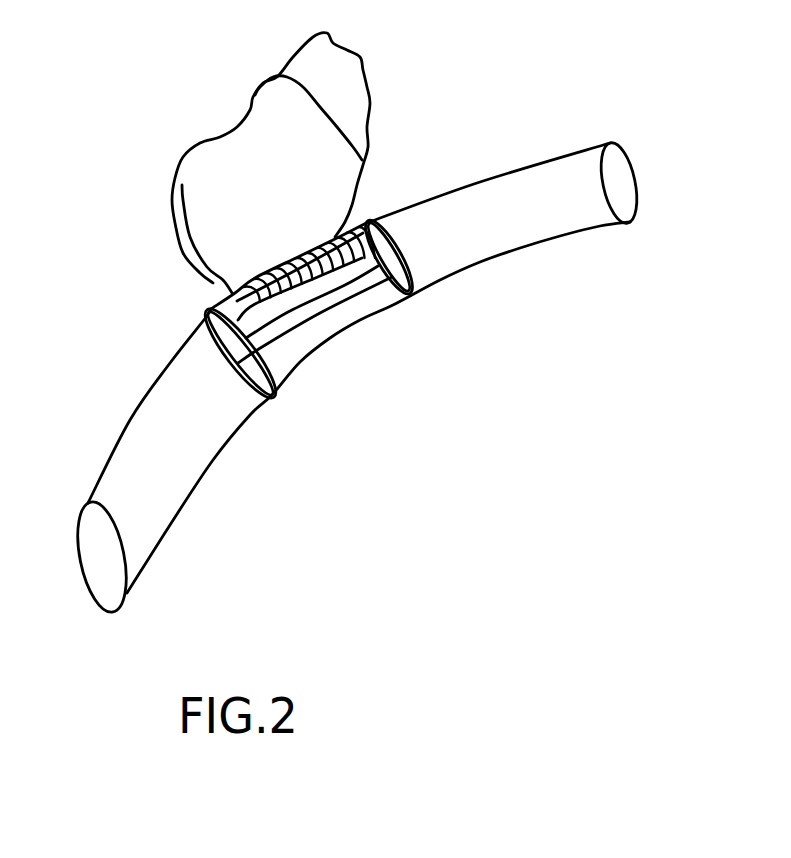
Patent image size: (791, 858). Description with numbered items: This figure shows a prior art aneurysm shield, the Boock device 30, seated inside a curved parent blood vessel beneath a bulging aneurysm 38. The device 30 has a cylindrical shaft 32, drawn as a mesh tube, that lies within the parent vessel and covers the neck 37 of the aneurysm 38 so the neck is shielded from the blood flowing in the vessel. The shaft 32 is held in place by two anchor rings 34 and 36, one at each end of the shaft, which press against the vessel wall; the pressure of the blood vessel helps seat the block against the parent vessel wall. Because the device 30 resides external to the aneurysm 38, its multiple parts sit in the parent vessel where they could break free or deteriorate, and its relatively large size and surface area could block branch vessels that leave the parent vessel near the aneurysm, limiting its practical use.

The Boock device 30 is at (236, 292).
The cylindrical shaft 32 is at (356, 373).
The anchor ring 34 is at (231, 372).
The anchor ring 36 is at (389, 310).
The neck 37 is at (231, 271).
The aneurysm 38 is at (271, 163).